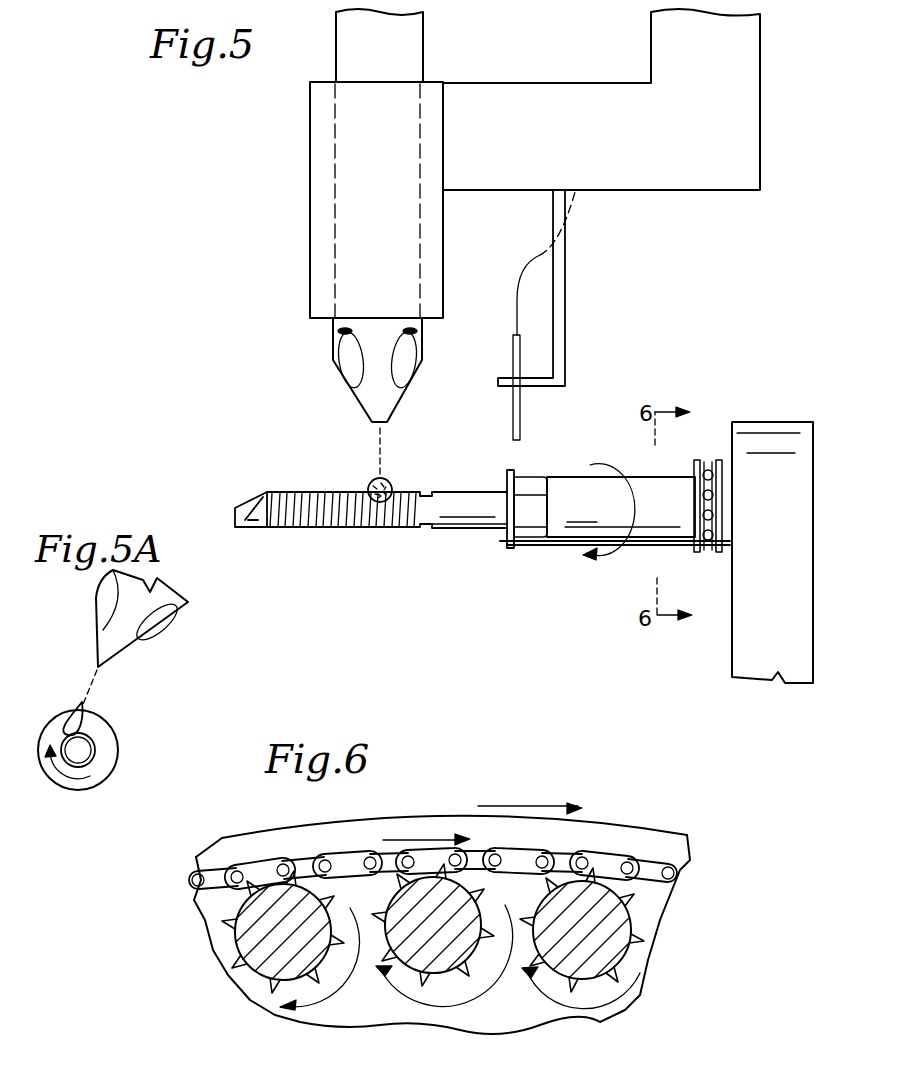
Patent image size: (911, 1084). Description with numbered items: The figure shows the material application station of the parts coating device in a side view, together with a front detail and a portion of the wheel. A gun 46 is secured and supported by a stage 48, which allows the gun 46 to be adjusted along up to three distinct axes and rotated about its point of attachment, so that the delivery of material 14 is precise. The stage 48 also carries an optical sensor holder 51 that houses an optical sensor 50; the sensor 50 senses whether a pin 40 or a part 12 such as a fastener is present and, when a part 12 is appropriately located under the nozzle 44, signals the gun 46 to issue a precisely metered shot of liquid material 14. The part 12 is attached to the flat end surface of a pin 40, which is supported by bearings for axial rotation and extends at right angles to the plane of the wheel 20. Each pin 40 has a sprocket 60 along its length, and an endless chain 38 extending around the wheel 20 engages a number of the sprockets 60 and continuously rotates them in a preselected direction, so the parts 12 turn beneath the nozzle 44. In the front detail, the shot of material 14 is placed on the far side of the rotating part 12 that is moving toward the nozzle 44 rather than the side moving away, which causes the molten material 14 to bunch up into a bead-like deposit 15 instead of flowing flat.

In FIG. 5, the part 12 is at (452, 530).
In FIG. 5A, the part 12 is at (92, 762).
In FIG. 5, the material 14 is at (378, 458).
In FIG. 5A, the material 14 is at (95, 683).
In FIG. 5, the bead-like deposit 15 is at (392, 487).
In FIG. 5A, the bead-like deposit 15 is at (74, 712).
In FIG. 5, the wheel 20 is at (805, 515).
In FIG. 6, the wheel 20 is at (400, 822).
In FIG. 5, the endless chain 38 is at (678, 541).
In FIG. 6, the endless chain 38 is at (632, 862).
In FIG. 5, the pin 40 is at (601, 512).
In FIG. 6, the pin 40 is at (250, 940).
In FIG. 5, the nozzle 44 is at (333, 352).
In FIG. 5A, the nozzle 44 is at (96, 640).
In FIG. 5, the gun 46 is at (286, 193).
In FIG. 5, the stage 48 is at (615, 97).
In FIG. 5, the optical sensor 50 is at (513, 352).
In FIG. 5, the optical sensor holder 51 is at (565, 350).
In FIG. 5, the sprocket 60 is at (707, 462).
In FIG. 6, the sprocket 60 is at (237, 968).